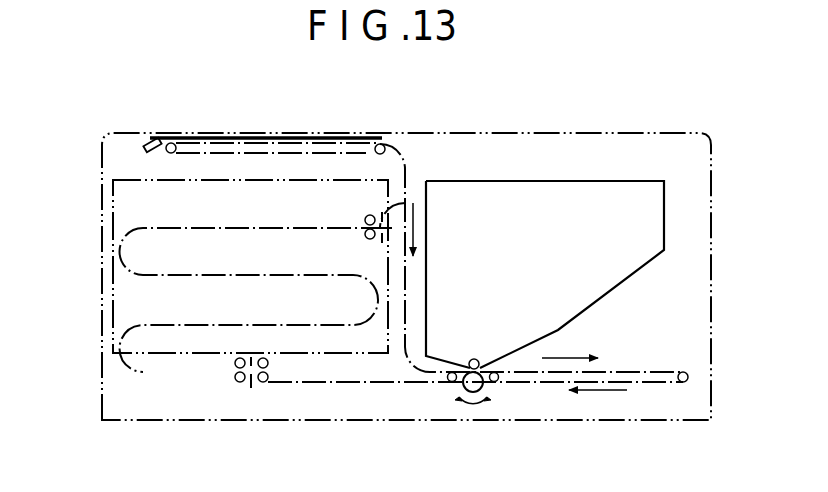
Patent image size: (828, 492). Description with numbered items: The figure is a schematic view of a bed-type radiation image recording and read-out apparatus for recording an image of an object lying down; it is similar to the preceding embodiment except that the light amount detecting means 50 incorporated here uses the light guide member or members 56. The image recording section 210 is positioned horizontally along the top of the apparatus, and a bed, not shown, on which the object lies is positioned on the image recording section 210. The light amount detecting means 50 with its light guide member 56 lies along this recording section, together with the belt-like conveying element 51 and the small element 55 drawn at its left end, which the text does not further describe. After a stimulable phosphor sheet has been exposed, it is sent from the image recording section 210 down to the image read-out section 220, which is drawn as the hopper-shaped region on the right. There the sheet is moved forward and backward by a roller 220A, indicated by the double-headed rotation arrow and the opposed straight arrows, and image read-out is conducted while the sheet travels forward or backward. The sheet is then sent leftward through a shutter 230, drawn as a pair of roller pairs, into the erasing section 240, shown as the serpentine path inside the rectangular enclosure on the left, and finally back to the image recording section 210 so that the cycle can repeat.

The light amount detecting means 50 is at (151, 157).
The conveyor belt 51 is at (287, 137).
The cutter 55 is at (148, 138).
The light guide member 56 is at (243, 133).
The image recording section 210 is at (323, 124).
The image read-out section 220 is at (485, 348).
The roller 220A is at (483, 388).
The shutter 230 is at (251, 390).
The erasing section 240 is at (263, 262).